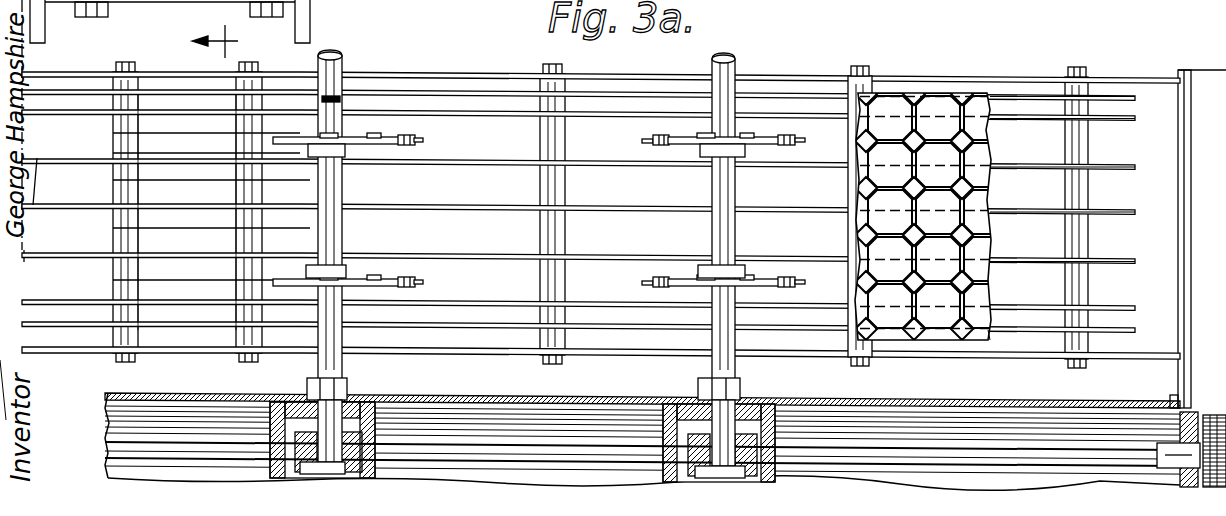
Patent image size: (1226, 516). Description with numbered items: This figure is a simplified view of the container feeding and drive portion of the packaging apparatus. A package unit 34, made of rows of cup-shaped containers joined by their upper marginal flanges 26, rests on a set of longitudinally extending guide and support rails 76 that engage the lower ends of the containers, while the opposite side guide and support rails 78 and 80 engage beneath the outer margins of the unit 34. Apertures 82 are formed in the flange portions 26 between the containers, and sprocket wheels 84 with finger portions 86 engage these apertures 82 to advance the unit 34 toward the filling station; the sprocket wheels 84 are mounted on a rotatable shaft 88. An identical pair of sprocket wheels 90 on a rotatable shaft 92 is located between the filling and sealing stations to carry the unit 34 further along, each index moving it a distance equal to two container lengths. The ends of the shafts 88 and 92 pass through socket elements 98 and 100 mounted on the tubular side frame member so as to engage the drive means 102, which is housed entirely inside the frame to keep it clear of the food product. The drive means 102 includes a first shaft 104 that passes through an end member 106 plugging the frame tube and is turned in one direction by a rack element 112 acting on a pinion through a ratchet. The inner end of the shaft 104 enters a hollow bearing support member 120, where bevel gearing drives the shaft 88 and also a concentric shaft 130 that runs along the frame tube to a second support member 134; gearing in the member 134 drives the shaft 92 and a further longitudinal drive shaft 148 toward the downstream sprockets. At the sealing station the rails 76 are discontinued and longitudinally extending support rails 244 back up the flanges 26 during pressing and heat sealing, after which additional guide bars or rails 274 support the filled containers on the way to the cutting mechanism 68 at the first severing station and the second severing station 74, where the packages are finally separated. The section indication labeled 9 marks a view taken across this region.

The section line 9 is at (223, 41).
The upper marginal flange 26 is at (850, 192).
The package unit 34 is at (952, 89).
The cutting mechanism 68 is at (180, 110).
The second severing station 74 is at (995, 118).
The guide and support rails 76 is at (1002, 207).
The side guide and support rail 78 is at (990, 336).
The side guide and support rail 80 is at (995, 95).
The apertures 82 is at (962, 140).
The sprocket wheels 84 is at (752, 136).
The finger portions 86 is at (722, 152).
The rotatable shaft 88 is at (713, 87).
The sprocket wheels 90 is at (398, 135).
The rotatable shaft 92 is at (333, 101).
The socket element 98 is at (735, 395).
The socket element 100 is at (318, 398).
The drive means 102 is at (649, 443).
The first shaft 104 is at (880, 453).
The end member 106 is at (1140, 428).
The rack element 112 is at (1195, 204).
The hollow bearing support member 120 is at (778, 425).
The shaft 130 is at (460, 452).
The support member 134 is at (405, 392).
The drive shaft 148 is at (175, 452).
The support rails 244 is at (181, 282).
The guide bars or rails 274 is at (38, 258).